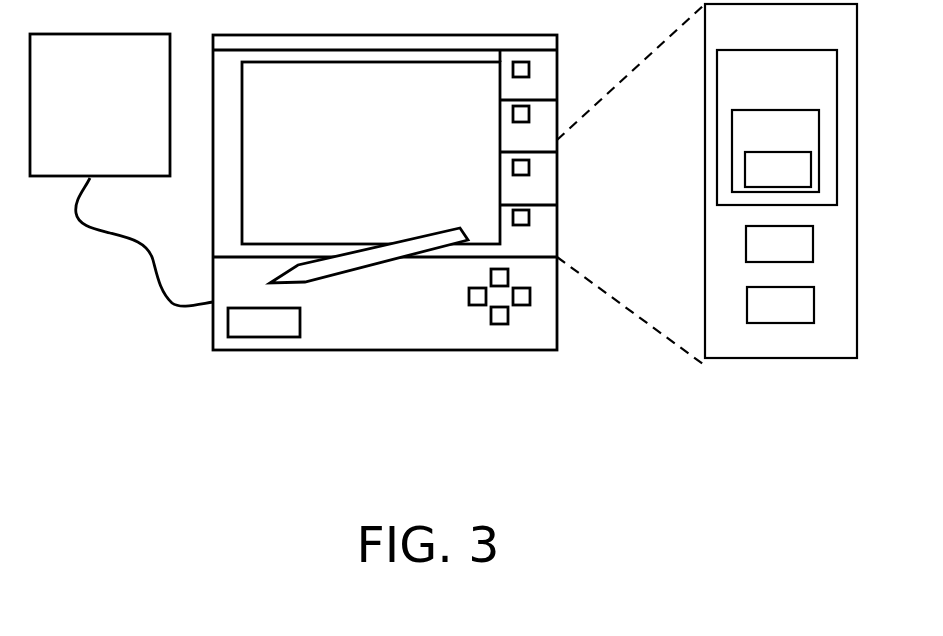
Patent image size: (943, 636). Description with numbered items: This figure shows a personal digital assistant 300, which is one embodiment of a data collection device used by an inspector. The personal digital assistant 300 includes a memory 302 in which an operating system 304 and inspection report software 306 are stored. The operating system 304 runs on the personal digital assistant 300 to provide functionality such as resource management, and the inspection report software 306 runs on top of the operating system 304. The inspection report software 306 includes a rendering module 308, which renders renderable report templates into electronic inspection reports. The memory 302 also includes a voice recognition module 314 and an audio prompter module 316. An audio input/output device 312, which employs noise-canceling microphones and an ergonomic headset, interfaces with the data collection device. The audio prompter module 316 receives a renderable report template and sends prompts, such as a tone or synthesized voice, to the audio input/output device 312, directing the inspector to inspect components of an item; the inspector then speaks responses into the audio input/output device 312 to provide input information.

The personal digital assistant 300 is at (378, 151).
The memory 302 is at (791, 36).
The operating system 304 is at (794, 85).
The inspection report software 306 is at (794, 142).
The rendering module 308 is at (797, 178).
The audio input/output device 312 is at (125, 111).
The voice recognition module 314 is at (798, 253).
The audio prompter module 316 is at (799, 313).